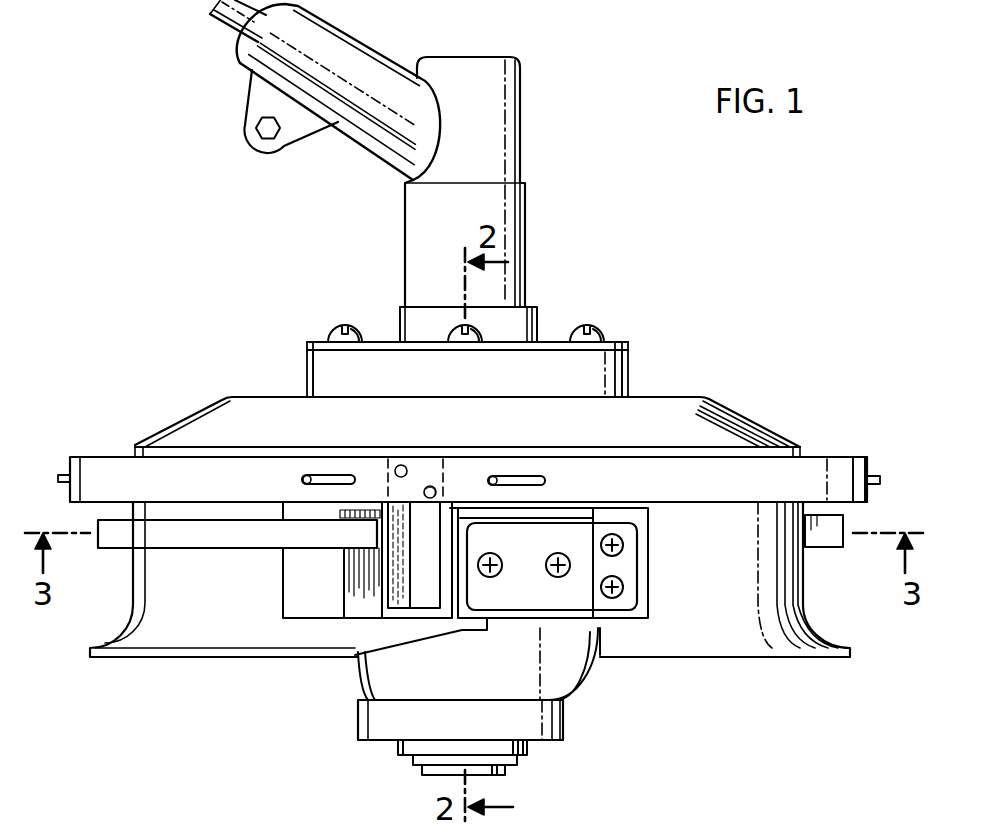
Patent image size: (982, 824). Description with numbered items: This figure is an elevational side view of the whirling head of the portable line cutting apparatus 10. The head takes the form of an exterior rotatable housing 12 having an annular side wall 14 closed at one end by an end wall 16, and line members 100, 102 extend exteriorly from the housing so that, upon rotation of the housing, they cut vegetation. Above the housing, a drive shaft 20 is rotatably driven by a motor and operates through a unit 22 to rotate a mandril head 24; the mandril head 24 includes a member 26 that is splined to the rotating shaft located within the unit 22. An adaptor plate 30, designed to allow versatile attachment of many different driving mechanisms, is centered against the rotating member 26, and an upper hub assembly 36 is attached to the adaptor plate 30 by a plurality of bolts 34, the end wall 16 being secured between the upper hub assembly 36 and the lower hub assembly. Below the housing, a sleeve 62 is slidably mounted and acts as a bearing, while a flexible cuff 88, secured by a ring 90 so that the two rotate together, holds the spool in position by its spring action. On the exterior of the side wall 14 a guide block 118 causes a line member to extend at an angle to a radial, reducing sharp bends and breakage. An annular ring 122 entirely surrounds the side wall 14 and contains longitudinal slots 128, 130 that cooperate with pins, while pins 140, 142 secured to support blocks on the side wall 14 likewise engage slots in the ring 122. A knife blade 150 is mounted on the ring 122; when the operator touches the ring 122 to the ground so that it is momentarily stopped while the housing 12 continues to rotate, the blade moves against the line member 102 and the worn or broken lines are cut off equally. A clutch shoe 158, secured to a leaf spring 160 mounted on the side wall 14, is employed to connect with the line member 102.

The apparatus 10 is at (718, 280).
The rotatable housing 12 is at (748, 415).
The annular side wall 14 is at (190, 607).
The end wall 16 is at (655, 393).
The drive shaft 20 is at (216, 27).
The unit 22 is at (523, 97).
The mandril head 24 is at (540, 320).
The member 26 is at (403, 310).
The adaptor plate 30 is at (628, 345).
The bolts 34 is at (335, 332).
The upper hub assembly 36 is at (312, 368).
The sleeve 62 is at (505, 770).
The cuff 88 is at (560, 680).
The ring 90 is at (553, 725).
The line member 100 is at (818, 548).
The line member 102 is at (122, 548).
The block 118 is at (292, 612).
The annular ring 122 is at (838, 470).
The longitudinal slot 128 is at (325, 478).
The longitudinal slot 130 is at (550, 480).
The pin 140 is at (880, 480).
The pin 142 is at (66, 476).
The knife blade 150 is at (428, 605).
The clutch shoe 158 is at (517, 618).
The leaf spring 160 is at (545, 603).